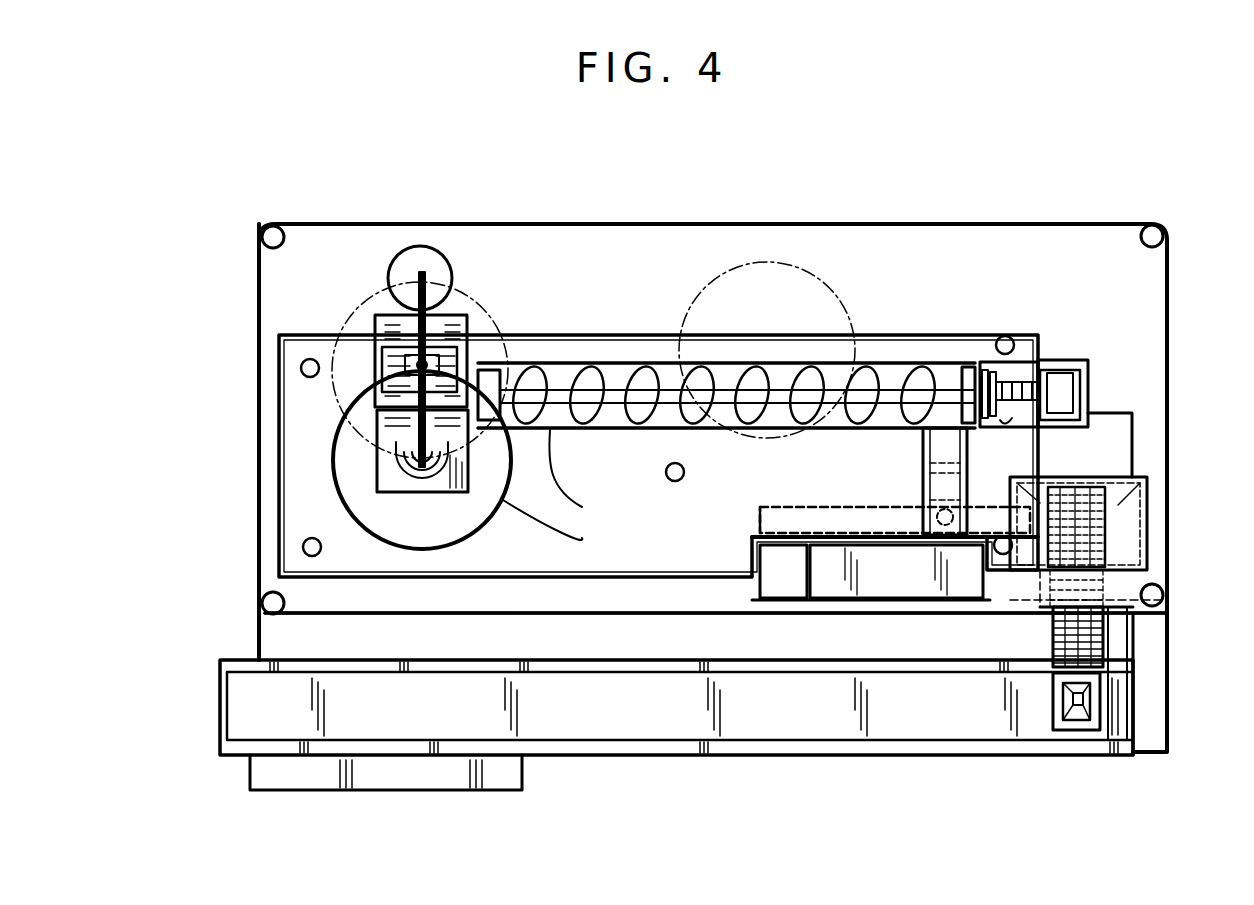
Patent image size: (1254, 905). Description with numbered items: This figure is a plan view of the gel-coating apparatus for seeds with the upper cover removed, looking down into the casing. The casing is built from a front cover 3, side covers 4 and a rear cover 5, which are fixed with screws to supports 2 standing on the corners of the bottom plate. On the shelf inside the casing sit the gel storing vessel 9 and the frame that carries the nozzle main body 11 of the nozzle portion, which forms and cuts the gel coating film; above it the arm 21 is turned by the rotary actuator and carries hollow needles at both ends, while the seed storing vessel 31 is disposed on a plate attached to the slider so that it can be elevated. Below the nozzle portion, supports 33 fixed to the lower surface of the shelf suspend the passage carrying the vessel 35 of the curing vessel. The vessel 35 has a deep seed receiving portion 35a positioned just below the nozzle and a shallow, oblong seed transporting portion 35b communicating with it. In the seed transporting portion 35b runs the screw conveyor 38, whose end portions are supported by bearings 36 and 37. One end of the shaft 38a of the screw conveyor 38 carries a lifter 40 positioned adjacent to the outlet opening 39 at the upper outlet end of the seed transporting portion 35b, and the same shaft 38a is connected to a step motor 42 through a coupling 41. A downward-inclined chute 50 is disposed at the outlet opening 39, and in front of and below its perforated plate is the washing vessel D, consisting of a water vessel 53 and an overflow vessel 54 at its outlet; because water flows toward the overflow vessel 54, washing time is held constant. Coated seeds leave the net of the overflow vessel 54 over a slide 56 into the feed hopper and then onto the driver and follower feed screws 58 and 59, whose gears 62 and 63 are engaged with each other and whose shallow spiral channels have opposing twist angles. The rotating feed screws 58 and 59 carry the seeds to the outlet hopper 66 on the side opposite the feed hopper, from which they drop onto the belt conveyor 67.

The supports 2 is at (1153, 225).
The front cover 3 is at (470, 617).
The side covers 4 is at (259, 430).
The rear cover 5 is at (598, 224).
The gel storing vessel 9 is at (798, 277).
The nozzle main body 11 is at (392, 488).
The arm 21 is at (410, 317).
The seed storing vessel 31 is at (402, 250).
The supports 33 is at (301, 368).
The vessel 35 is at (643, 492).
The seed receiving portion 35a is at (573, 528).
The seed transporting portion 35b is at (596, 478).
The bearing 36 is at (970, 367).
The bearing 37 is at (467, 373).
The screw conveyor 38 is at (612, 363).
The shaft 38a is at (995, 385).
The outlet opening 39 is at (953, 433).
The lifter 40 is at (960, 363).
The coupling 41 is at (1007, 413).
The step motor 42 is at (1088, 375).
The chute 50 is at (922, 480).
The water vessel 53 is at (898, 587).
The overflow vessel 54 is at (782, 590).
The slide 56 is at (775, 507).
The feed screw 58 is at (1132, 622).
The feed screw 59 is at (1047, 627).
The gear 62 is at (1135, 495).
The gear 63 is at (1070, 500).
The outlet hopper 66 is at (1132, 685).
The belt conveyor 67 is at (978, 752).
The washing vessel D is at (847, 603).